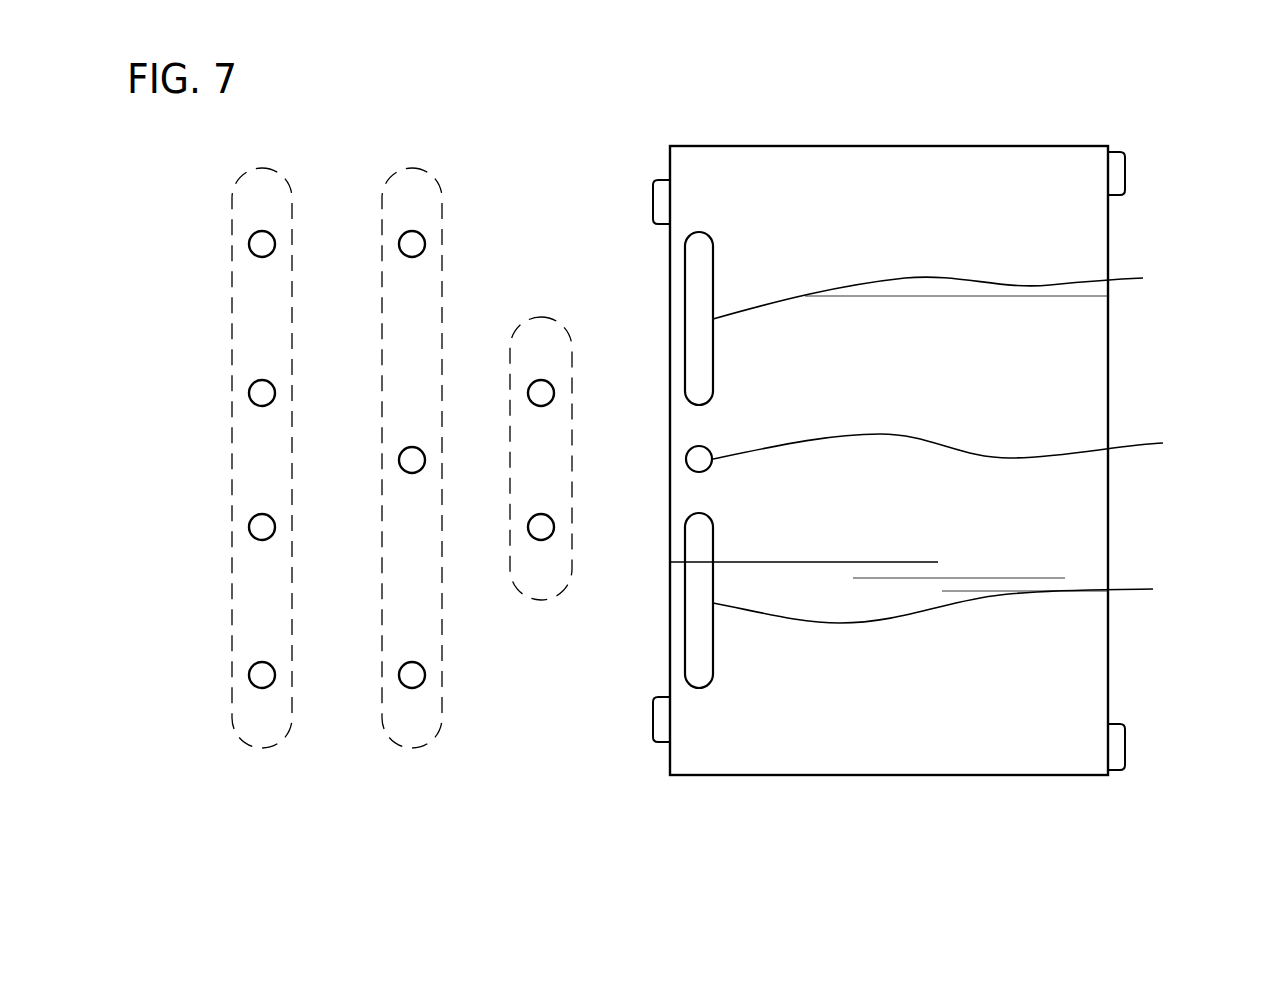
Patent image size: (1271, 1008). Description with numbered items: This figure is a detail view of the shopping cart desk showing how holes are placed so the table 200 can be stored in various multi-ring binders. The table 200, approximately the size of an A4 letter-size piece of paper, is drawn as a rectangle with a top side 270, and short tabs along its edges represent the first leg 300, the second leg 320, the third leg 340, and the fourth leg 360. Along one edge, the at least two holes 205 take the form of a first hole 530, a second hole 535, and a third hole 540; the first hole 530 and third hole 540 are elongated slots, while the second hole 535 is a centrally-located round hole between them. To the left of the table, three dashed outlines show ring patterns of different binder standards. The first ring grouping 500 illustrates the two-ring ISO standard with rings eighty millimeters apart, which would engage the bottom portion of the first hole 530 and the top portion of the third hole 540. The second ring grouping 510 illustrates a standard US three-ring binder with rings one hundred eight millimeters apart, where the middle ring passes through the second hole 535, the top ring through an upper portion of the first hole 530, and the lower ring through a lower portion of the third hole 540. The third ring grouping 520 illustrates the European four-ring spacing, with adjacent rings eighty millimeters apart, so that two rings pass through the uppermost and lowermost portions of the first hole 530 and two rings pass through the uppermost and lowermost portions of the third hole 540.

The table 200 is at (1099, 107).
The at least two holes 205 is at (725, 797).
The top side 270 is at (1003, 722).
The first leg 300 is at (1120, 172).
The second leg 320 is at (1122, 757).
The third leg 340 is at (660, 198).
The fourth leg 360 is at (660, 735).
The first ring grouping 500 is at (542, 602).
The second ring grouping 510 is at (412, 750).
The third ring grouping 520 is at (260, 750).
The first hole 530 is at (958, 291).
The second hole 535 is at (973, 443).
The third hole 540 is at (964, 597).